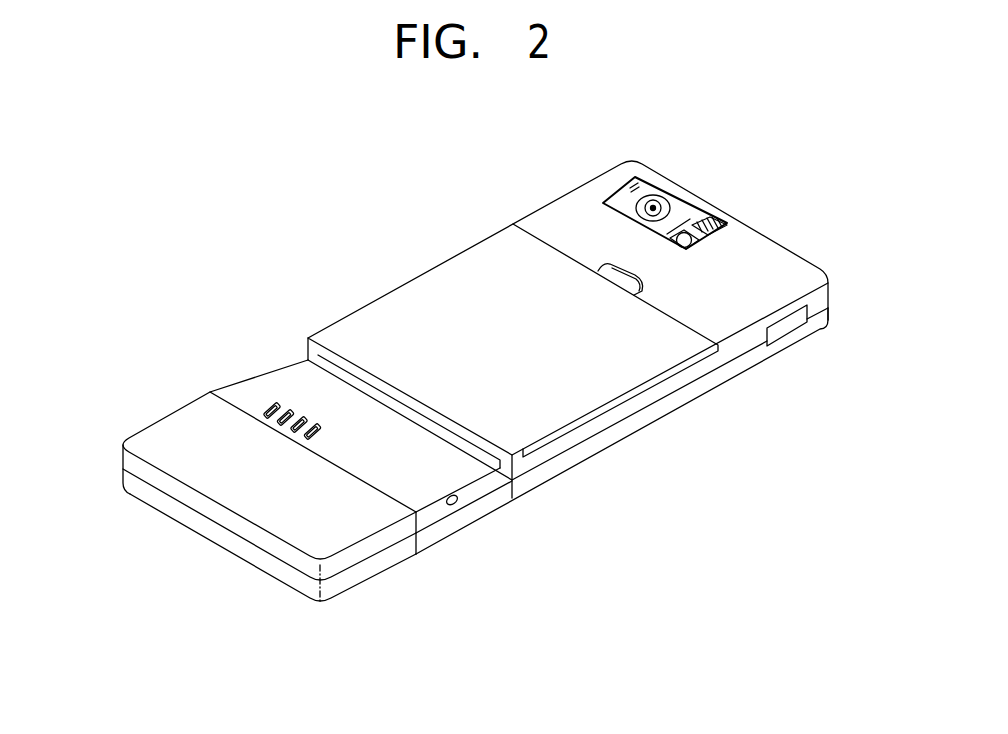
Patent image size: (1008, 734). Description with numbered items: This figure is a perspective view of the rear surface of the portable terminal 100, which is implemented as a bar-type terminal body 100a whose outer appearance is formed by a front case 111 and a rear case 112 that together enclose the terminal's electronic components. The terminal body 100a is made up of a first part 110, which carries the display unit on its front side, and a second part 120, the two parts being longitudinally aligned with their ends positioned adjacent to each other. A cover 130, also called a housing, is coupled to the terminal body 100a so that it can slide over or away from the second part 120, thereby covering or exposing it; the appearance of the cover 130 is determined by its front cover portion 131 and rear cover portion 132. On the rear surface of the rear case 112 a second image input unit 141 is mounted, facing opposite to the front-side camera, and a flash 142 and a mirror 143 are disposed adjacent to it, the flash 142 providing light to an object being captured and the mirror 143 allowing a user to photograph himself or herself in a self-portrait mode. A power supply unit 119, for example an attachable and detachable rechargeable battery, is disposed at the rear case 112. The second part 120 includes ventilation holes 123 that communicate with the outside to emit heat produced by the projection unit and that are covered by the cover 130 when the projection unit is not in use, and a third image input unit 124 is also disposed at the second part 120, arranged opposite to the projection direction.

The portable terminal 100 is at (347, 216).
The terminal body 100a is at (319, 246).
The first part 110 is at (362, 299).
The front case 111 is at (822, 313).
The rear case 112 is at (824, 292).
The power supply unit 119 is at (448, 272).
The second part 120 is at (284, 364).
The ventilation holes 123 is at (264, 408).
The third image input unit 124 is at (458, 506).
The cover 130 is at (150, 420).
The front cover portion 131 is at (124, 488).
The rear cover portion 132 is at (125, 466).
The second image input unit 141 is at (658, 208).
The flash 142 is at (719, 223).
The mirror 143 is at (687, 234).